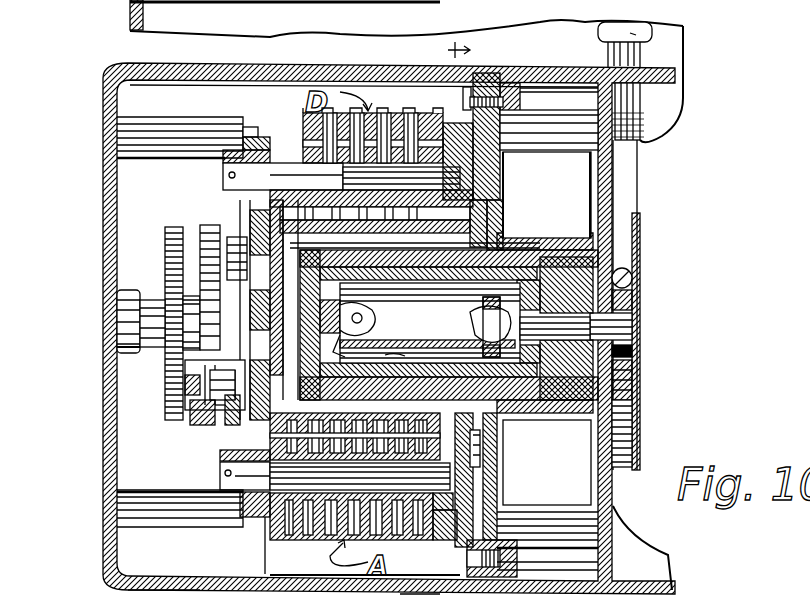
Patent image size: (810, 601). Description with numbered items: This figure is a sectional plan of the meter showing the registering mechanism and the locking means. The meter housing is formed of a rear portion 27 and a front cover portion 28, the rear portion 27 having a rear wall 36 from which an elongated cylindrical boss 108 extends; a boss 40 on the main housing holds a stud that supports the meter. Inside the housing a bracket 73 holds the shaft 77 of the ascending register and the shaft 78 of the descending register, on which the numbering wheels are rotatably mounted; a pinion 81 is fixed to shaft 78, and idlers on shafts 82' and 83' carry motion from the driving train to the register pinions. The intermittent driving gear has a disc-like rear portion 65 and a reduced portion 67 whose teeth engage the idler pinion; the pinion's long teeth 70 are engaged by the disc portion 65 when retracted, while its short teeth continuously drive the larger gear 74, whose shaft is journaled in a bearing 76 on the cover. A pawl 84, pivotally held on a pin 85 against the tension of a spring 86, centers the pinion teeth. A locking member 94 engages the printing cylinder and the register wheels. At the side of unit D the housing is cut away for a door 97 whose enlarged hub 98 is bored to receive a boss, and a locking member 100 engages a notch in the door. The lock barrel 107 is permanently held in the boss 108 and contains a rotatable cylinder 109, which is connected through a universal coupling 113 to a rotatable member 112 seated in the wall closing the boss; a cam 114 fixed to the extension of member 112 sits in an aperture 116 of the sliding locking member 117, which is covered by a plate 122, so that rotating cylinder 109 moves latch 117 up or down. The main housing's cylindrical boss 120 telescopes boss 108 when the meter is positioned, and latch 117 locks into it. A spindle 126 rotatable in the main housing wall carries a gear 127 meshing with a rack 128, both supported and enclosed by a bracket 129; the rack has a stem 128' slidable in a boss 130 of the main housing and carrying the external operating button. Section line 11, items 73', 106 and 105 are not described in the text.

The front cover portion 28 is at (108, 103).
The lock barrel 107 is at (620, 32).
The boss of main housing 130 is at (645, 141).
The stem of rack 128' is at (665, 305).
The gear 127 is at (634, 344).
The spindle 126 is at (603, 323).
The rack 128 is at (661, 381).
The bracket 129 is at (632, 420).
The section line 11 is at (476, 55).
The bracket 73 is at (180, 171).
The pinion 81 is at (250, 127).
The shaft 78 is at (222, 171).
The door 97 is at (333, 68).
The hub of door 98 is at (292, 107).
The rear portion of meter housing 27 is at (450, 73).
The boss 40 is at (566, 103).
The bearing box 73' is at (528, 328).
The cylindrical boss 120 is at (500, 238).
The elongated cylindrical boss 108 is at (544, 230).
The rotatable cylinder 109 is at (571, 318).
The universal coupling 113 is at (502, 323).
The rotatable member 112 is at (363, 326).
The aperture 116 is at (370, 286).
The cam 114 is at (334, 358).
The locking member 117 is at (396, 361).
The disc-like rear portion 65 is at (175, 244).
The long teeth 70 is at (118, 309).
The gear 74 is at (166, 324).
The bearing 76 is at (130, 313).
The reduced portion 67 is at (243, 259).
The shaft 83' is at (197, 310).
The locking member 94 is at (205, 229).
The pin 85 is at (190, 376).
The spring 86 is at (190, 399).
The pawl 84 is at (207, 434).
The shaft 82' is at (142, 437).
The plate 122 is at (225, 456).
The shaft 77 is at (224, 471).
The rear wall 36 is at (499, 443).
The base 106 is at (117, 594).
The support 105 is at (423, 596).
The locking member 100 is at (175, 595).